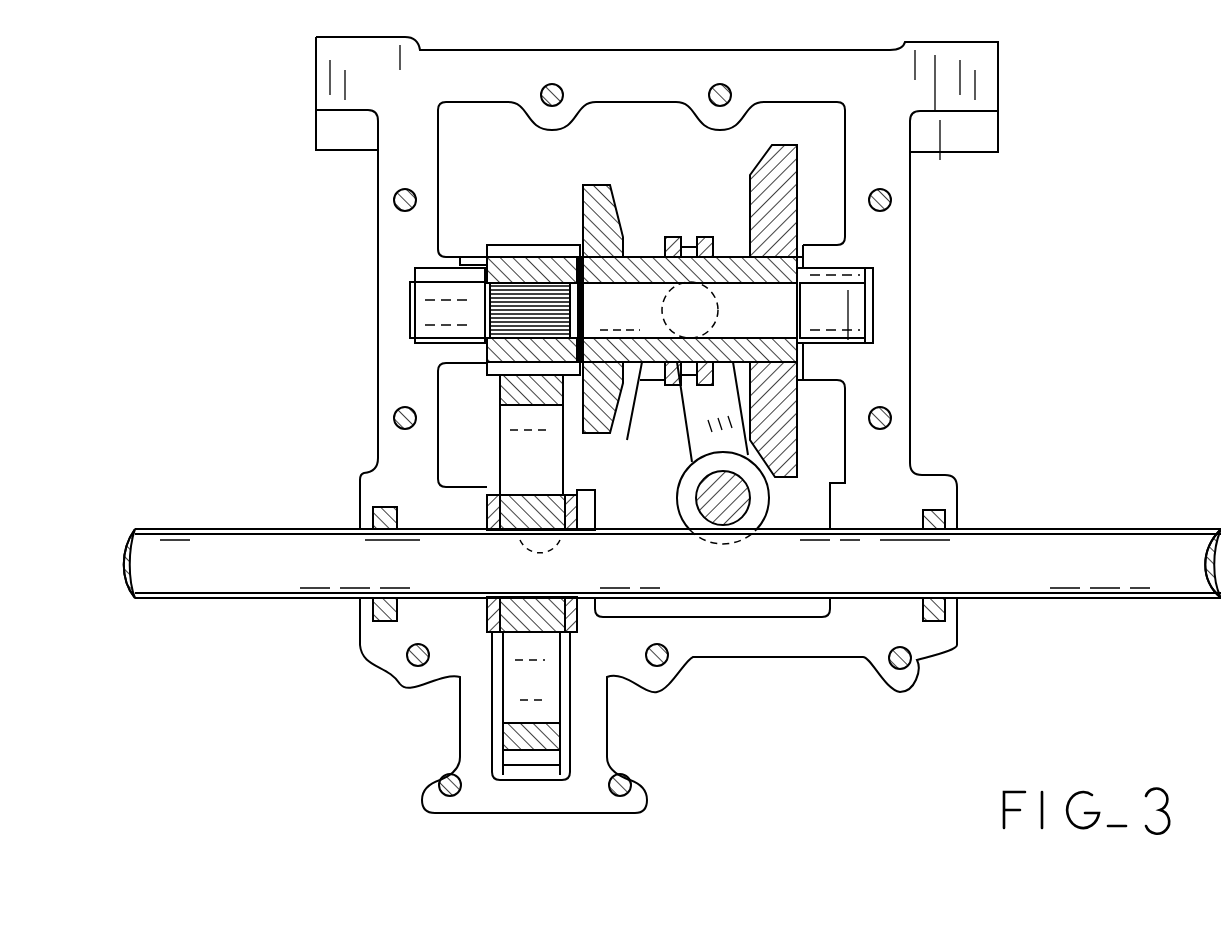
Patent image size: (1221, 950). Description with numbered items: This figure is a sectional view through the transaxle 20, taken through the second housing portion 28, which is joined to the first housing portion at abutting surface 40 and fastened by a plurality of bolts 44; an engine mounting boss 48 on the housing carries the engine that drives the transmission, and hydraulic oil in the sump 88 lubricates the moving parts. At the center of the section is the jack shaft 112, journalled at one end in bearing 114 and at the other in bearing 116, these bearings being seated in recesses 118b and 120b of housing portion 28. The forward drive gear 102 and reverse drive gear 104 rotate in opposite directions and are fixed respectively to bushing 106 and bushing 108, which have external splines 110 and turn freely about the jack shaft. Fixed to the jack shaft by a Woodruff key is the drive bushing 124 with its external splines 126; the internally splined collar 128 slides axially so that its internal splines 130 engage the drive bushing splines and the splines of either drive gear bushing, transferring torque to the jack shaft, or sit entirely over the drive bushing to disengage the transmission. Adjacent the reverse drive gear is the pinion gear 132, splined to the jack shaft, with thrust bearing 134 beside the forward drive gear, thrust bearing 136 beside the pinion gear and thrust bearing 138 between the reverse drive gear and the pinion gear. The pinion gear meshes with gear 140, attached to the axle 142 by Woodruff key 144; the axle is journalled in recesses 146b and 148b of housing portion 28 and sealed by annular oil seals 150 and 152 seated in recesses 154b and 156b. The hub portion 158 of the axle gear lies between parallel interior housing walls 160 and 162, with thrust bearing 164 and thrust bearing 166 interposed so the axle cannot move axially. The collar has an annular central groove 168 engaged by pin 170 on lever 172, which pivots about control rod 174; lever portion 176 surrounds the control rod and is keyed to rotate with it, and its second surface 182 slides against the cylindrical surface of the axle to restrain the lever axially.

The transaxle 20 is at (238, 170).
The second housing portion 28 is at (1000, 136).
The abutting surface 40 is at (896, 509).
The bolts 44 is at (552, 84).
The engine mounting boss 48 is at (338, 55).
The sump 88 is at (825, 488).
The forward drive gear 102 is at (780, 200).
The reverse drive gear 104 is at (612, 185).
The bushing 106 is at (738, 185).
The bushing 108 is at (640, 257).
The external splines 110 is at (696, 398).
The jack shaft 112 is at (855, 298).
The bearing 114 is at (873, 272).
The bearing 116 is at (410, 287).
The recess 118b is at (445, 340).
The recess 120b is at (850, 325).
The drive bushing 124 is at (704, 346).
The external splines 126 is at (678, 375).
The internally splined collar 128 is at (706, 237).
The internal splines 130 is at (700, 237).
The pinion gear 132 is at (528, 245).
The thrust bearing 134 is at (800, 264).
The thrust bearing 136 is at (481, 257).
The thrust bearing 138 is at (580, 245).
The gear 140 is at (500, 432).
The axle 142 is at (1100, 540).
The Woodruff key 144 is at (530, 540).
The recess 146b is at (893, 535).
The recess 148b is at (400, 533).
The annular oil seal 150 is at (945, 512).
The annular oil seal 152 is at (385, 510).
The recess 154b is at (947, 608).
The recess 156b is at (370, 612).
The hub portion 158 is at (555, 500).
The interior housing wall 160 is at (510, 495).
The interior housing wall 162 is at (570, 648).
The thrust bearing 164 is at (487, 612).
The thrust bearing 166 is at (580, 530).
The annular central groove 168 is at (668, 237).
The pin 170 is at (652, 312).
The lever 172 is at (697, 440).
The control rod 174 is at (730, 524).
The lever portion 176 is at (762, 505).
The second surface 182 is at (680, 512).